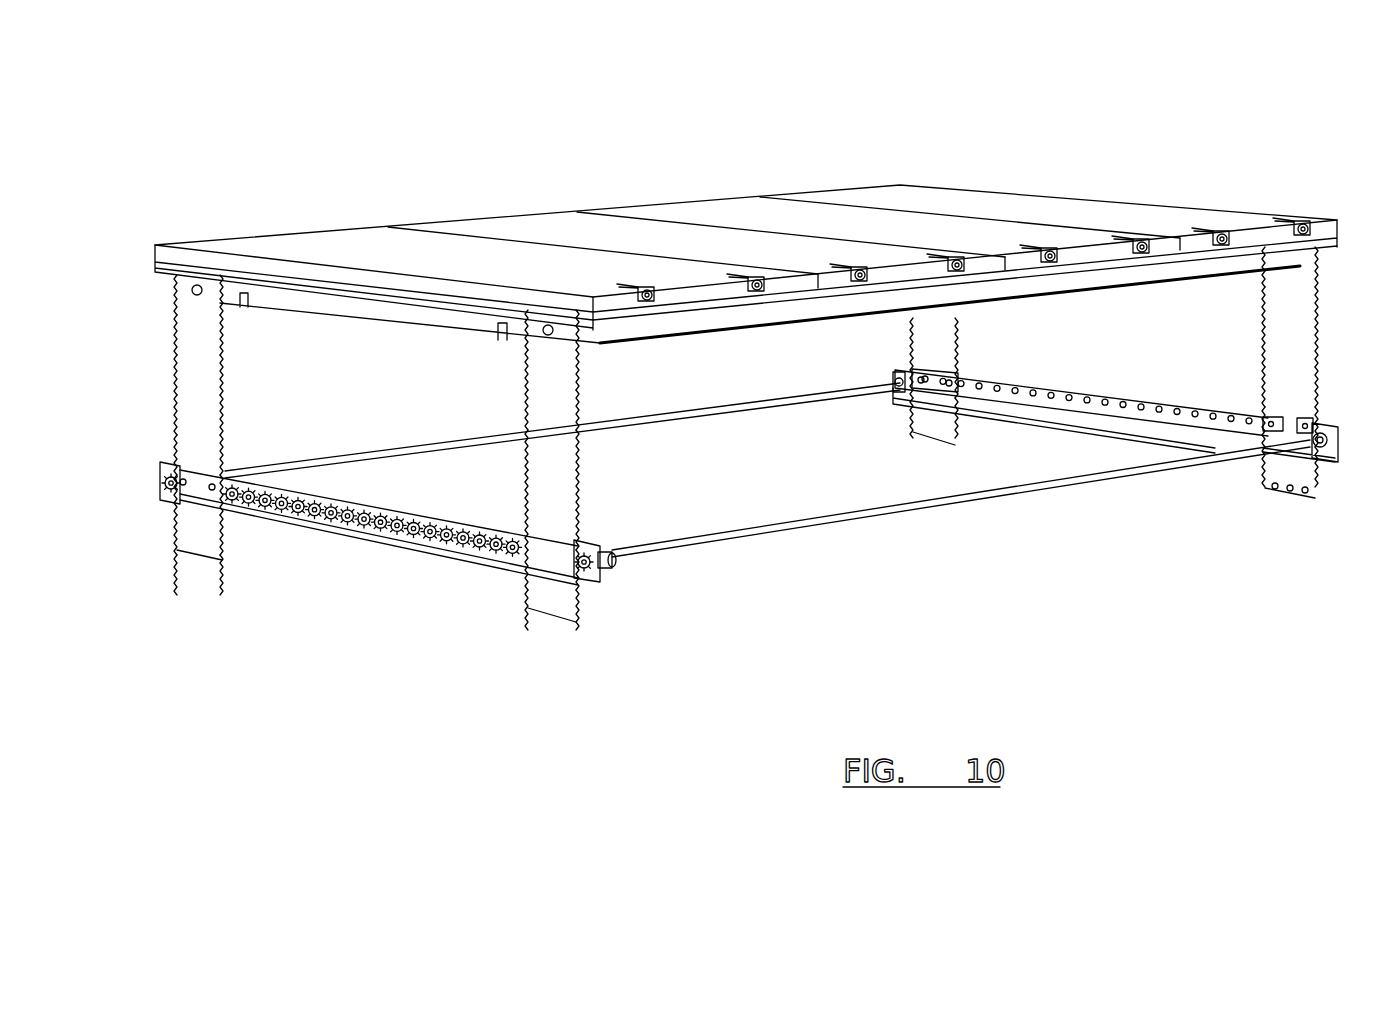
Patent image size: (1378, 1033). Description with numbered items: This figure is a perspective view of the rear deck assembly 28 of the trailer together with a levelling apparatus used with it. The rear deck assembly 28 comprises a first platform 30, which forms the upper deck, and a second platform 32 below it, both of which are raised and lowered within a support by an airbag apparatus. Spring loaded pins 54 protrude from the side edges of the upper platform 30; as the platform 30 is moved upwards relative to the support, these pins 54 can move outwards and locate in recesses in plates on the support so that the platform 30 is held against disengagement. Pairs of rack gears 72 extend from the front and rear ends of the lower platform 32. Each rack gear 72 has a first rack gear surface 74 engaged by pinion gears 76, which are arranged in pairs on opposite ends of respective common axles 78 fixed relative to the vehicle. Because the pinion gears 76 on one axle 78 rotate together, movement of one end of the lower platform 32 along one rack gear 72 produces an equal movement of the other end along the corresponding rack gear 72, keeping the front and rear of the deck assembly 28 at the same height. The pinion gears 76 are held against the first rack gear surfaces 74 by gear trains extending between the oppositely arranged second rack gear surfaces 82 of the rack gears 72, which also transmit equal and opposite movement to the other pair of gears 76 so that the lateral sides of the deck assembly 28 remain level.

The rear deck assembly 28 is at (737, 180).
The first platform 30 is at (372, 258).
The second platform 32 is at (690, 315).
The spring loaded pin 54 is at (962, 272).
The rack gear 72 is at (224, 357).
The first rack gear surface 74 is at (173, 372).
The pinion gear 76 is at (160, 490).
The common axle 78 is at (472, 445).
The second rack gear surface 82 is at (225, 418).